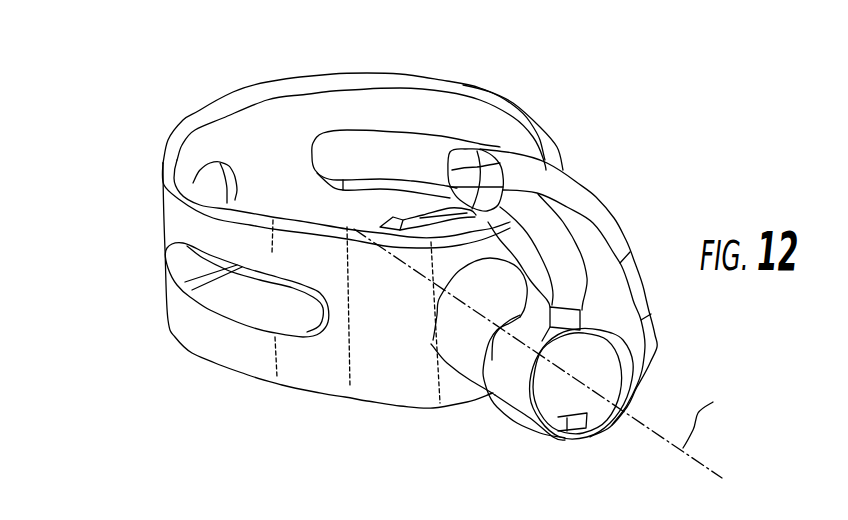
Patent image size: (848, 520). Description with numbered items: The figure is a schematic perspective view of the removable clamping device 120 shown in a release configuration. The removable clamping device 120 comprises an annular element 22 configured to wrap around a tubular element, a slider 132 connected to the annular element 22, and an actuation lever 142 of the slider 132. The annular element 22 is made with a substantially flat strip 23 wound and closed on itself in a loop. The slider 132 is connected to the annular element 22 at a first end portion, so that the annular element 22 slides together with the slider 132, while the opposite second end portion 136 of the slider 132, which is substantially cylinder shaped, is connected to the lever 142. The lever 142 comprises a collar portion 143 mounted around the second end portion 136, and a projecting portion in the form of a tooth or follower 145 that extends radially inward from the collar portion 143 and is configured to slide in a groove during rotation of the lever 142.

The removable clamping device 120 is at (132, 97).
The annular element 22 is at (397, 100).
The substantially flat strip 23 is at (222, 345).
The slider 132 is at (425, 355).
The actuation lever 142 is at (563, 175).
The collar portion 143 is at (507, 392).
The second end portion 136 is at (547, 397).
The tooth or follower 145 is at (573, 427).